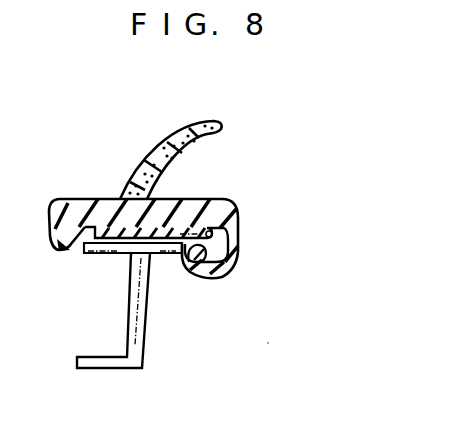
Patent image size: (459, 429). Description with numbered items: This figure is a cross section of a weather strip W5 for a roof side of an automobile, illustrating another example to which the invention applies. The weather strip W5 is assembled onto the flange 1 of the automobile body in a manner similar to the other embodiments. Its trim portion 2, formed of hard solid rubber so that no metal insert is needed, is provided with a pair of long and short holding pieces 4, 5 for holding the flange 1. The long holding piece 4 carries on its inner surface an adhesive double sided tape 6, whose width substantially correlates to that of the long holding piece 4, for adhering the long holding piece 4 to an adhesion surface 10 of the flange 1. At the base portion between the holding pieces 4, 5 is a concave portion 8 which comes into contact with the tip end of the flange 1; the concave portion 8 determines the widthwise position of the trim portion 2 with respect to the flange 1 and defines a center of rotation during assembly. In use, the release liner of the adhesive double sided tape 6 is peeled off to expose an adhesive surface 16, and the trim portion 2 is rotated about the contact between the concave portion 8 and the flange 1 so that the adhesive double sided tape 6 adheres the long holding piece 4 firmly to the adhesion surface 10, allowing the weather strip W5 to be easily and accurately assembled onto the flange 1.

The flange 1 is at (146, 333).
The trim portion 2 is at (80, 198).
The long holding piece 4 is at (186, 198).
The short holding piece 5 is at (223, 263).
The adhesive double sided tape 6 is at (122, 243).
The concave portion 8 is at (240, 224).
The adhesion surface 10 is at (171, 243).
The adhesive surface 16 is at (121, 244).
The weather strip for roof side W5 is at (292, 170).